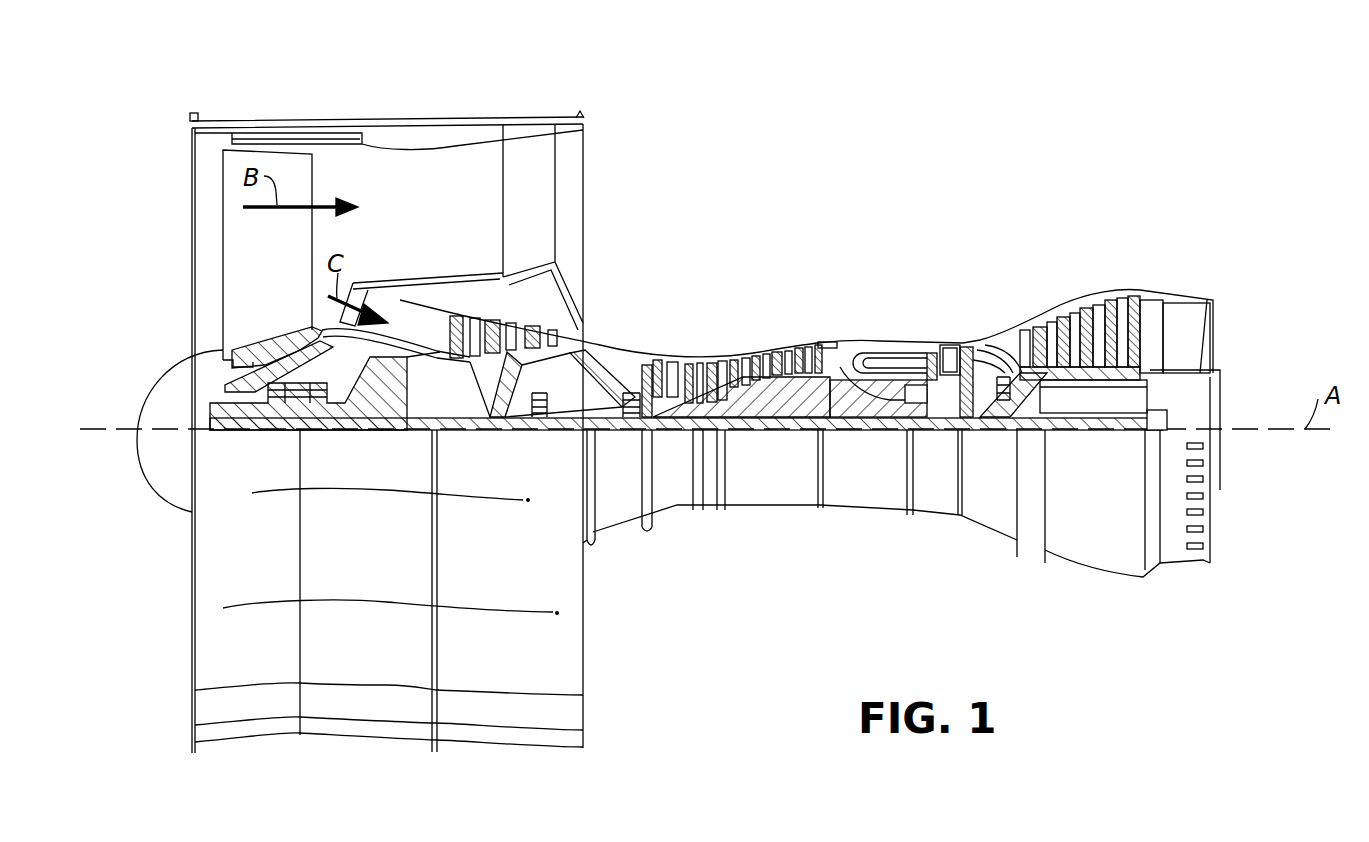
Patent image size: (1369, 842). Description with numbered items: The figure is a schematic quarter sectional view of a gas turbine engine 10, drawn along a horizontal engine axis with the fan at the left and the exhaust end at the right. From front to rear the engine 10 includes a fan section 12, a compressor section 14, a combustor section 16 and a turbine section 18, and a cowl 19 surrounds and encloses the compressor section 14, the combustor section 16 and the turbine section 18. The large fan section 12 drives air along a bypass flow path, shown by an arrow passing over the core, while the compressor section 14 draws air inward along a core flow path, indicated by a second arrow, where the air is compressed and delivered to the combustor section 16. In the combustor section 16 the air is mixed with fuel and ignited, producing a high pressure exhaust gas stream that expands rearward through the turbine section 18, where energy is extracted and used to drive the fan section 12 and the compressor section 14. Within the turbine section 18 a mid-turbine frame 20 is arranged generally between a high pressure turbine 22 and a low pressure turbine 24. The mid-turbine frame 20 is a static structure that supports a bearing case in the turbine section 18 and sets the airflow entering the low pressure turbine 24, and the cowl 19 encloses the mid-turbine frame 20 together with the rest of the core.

The gas turbine engine 10 is at (883, 182).
The fan section 12 is at (319, 120).
The compressor section 14 is at (627, 338).
The combustor section 16 is at (873, 332).
The turbine section 18 is at (1050, 276).
The cowl 19 is at (987, 505).
The mid-turbine frame 20 is at (1005, 333).
The high pressure turbine 22 is at (948, 335).
The low pressure turbine 24 is at (1106, 291).